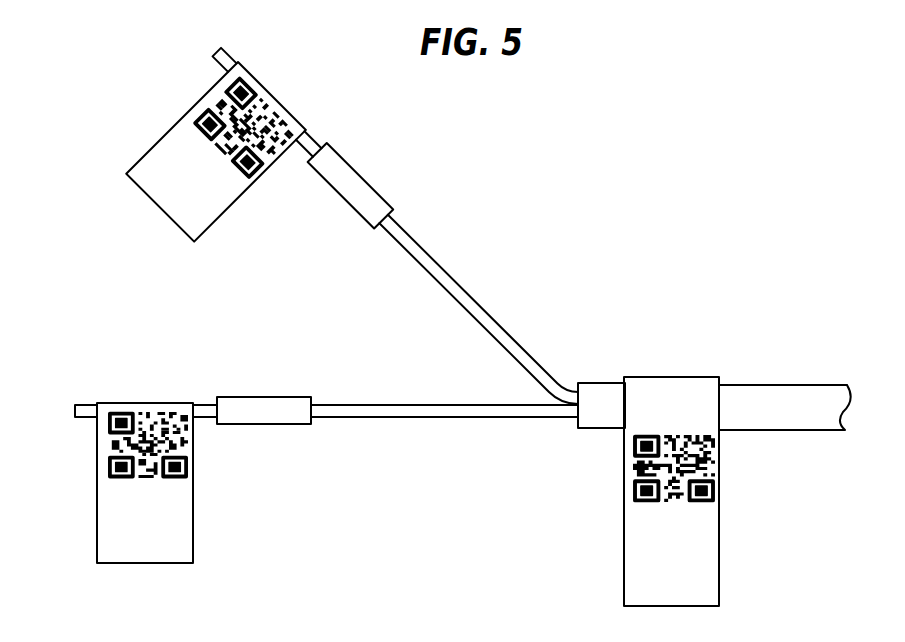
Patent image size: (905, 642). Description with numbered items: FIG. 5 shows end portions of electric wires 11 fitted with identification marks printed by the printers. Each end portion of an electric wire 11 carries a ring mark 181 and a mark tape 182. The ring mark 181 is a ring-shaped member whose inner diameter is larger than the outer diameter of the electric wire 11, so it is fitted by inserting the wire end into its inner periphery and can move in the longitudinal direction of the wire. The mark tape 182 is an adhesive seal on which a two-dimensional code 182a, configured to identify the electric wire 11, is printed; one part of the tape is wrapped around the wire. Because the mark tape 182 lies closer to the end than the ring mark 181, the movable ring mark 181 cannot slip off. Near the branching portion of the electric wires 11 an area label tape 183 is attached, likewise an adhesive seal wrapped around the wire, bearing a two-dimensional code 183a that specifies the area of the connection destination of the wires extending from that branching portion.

The electric wire 11 is at (480, 305).
The ring mark 181 is at (282, 397).
The mark tape 182 is at (170, 402).
The two-dimensional code 182a is at (201, 468).
The area label tape 183 is at (697, 375).
The two-dimensional code 183a is at (729, 490).